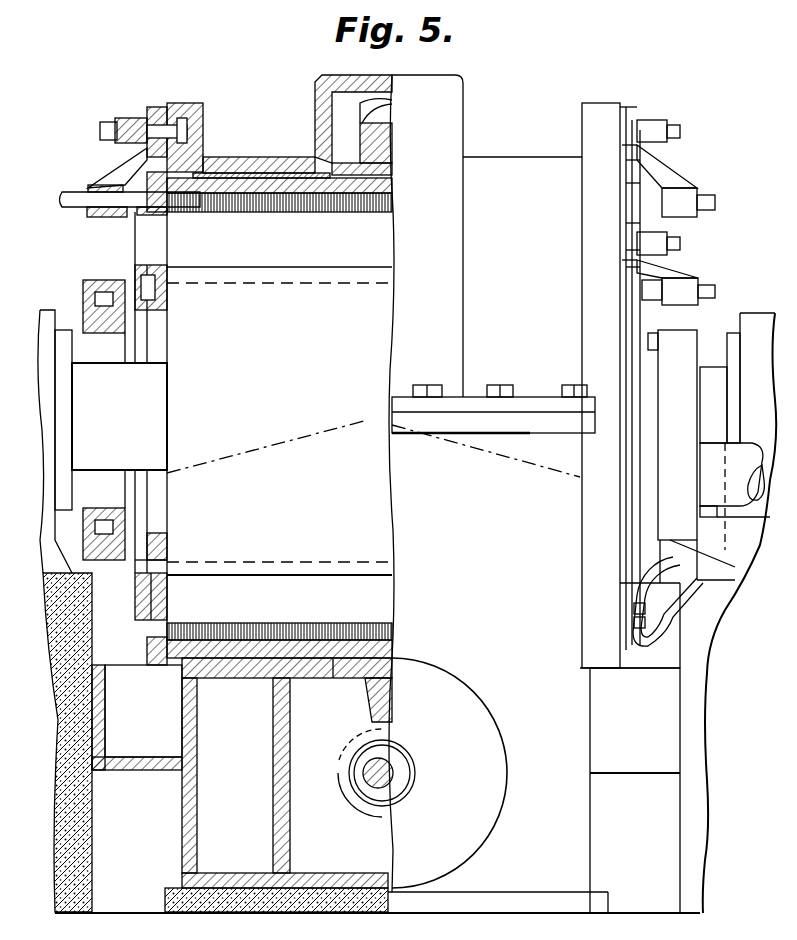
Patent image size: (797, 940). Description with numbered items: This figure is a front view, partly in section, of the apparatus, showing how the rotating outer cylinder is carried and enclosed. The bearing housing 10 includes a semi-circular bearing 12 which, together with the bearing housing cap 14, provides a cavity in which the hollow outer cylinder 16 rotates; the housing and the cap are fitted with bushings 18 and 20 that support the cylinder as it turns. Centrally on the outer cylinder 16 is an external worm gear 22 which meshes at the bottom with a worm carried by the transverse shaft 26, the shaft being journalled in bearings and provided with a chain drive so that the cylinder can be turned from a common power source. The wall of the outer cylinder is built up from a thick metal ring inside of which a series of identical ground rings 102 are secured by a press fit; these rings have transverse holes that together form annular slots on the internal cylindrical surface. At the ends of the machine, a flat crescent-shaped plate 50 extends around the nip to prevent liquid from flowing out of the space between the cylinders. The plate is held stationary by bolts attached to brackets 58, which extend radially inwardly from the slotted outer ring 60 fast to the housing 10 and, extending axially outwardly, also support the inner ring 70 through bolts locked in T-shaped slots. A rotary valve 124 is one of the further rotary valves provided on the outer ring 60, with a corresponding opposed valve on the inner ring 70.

The bearing housing 10 is at (403, 516).
The semi-circular bearing 12 is at (230, 680).
The bearing housing cap 14 is at (229, 166).
The outer cylinder 16 is at (180, 656).
The bushing 18 is at (263, 662).
The bushing 20 is at (273, 176).
The external worm gear 22 is at (372, 706).
The transverse shaft 26 is at (421, 781).
The crescent-shaped plate 50 is at (140, 606).
The bracket 58 is at (660, 607).
The outer ring 60 is at (197, 124).
The inner ring 70 is at (96, 280).
The ground ring 102 is at (273, 206).
The rotary valve 124 is at (78, 196).